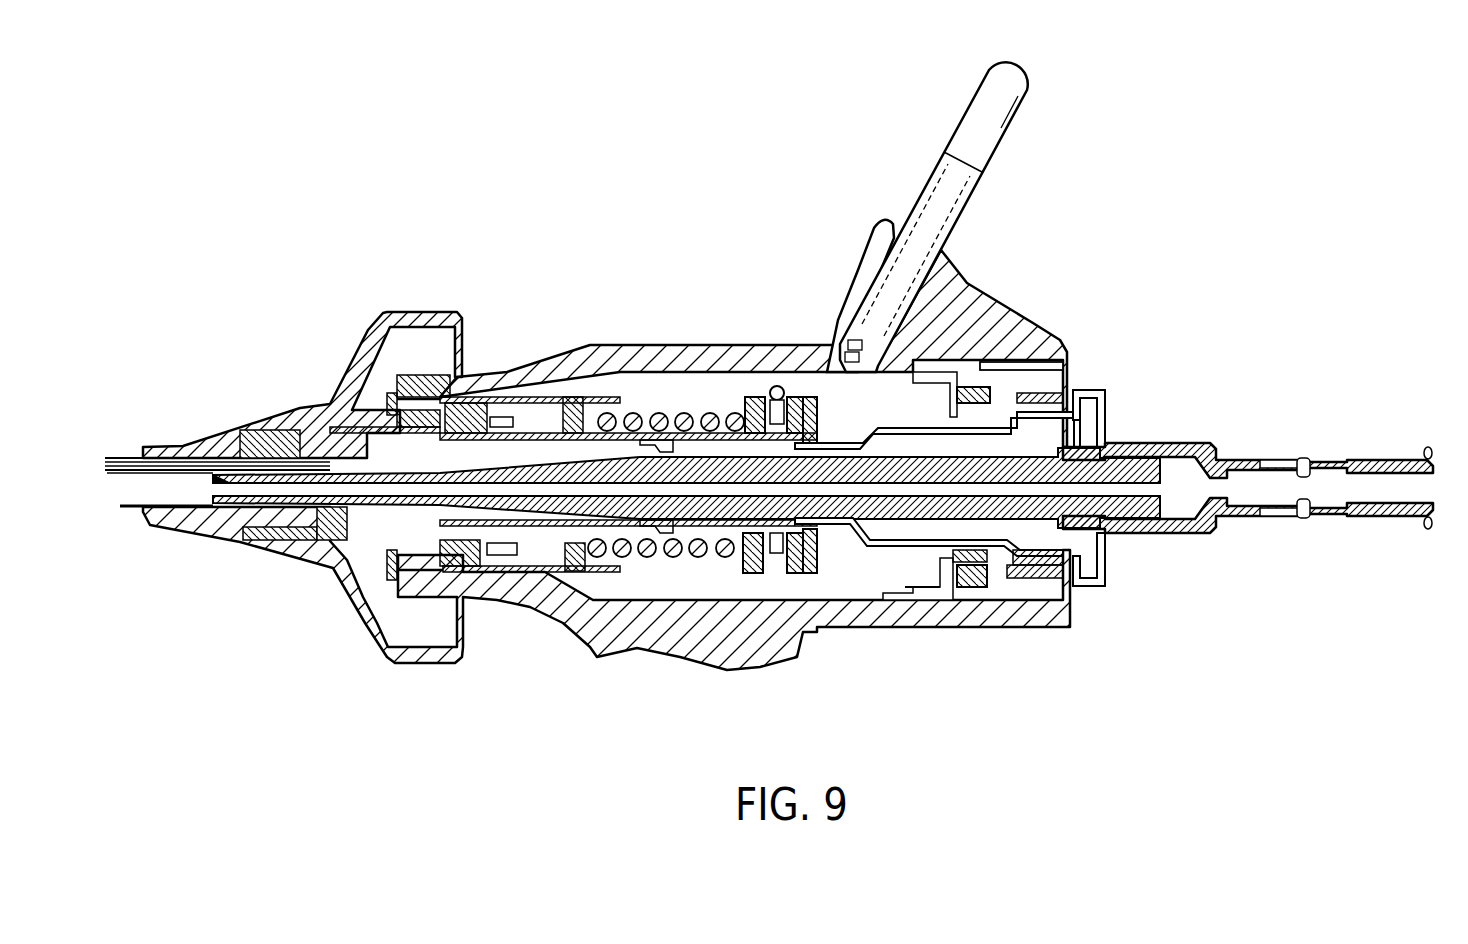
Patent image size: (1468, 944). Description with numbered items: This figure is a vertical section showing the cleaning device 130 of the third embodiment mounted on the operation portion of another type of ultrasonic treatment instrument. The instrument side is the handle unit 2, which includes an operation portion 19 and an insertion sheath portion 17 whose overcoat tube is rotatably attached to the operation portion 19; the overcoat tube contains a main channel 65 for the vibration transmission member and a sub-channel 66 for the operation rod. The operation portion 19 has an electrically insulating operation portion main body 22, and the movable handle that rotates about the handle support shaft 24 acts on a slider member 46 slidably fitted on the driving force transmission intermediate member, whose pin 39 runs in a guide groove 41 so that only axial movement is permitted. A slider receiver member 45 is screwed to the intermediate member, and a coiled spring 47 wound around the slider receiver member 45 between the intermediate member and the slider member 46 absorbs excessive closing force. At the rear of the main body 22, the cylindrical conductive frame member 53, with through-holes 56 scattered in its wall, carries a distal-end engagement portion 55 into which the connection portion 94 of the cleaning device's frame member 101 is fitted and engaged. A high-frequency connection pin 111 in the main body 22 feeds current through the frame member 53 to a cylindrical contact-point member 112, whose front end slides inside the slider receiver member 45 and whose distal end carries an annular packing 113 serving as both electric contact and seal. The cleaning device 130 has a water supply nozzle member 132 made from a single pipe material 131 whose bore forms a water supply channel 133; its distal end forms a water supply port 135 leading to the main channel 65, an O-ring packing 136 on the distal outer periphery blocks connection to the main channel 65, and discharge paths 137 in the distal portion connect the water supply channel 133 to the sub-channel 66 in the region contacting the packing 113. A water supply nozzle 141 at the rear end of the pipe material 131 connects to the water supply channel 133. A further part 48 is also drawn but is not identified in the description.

The handle unit 2 is at (531, 276).
The insertion sheath portion 17 is at (140, 437).
The operation portion 19 is at (793, 343).
The operation portion main body 22 is at (675, 345).
The handle support shaft 24 is at (774, 386).
The pin 39 is at (570, 397).
The guide groove 41 is at (606, 397).
The slider receiver member 45 is at (730, 556).
The slider member 46 is at (757, 573).
The coiled spring 47 is at (671, 557).
The flange 48 is at (343, 577).
The frame member 53 is at (940, 390).
The distal-end engagement portion 55 is at (990, 368).
The through-holes 56 is at (941, 590).
The main channel 65 is at (130, 497).
The sub-channel 66 is at (116, 456).
The connection portion 94 is at (975, 588).
The frame member 101 is at (1105, 406).
The high-frequency connection pin 111 is at (980, 138).
The contact-point member 112 is at (912, 548).
The packing 113 is at (658, 413).
The cleaning device 130 is at (1272, 410).
The pipe material 131 is at (882, 547).
The water supply nozzle member 132 is at (578, 512).
The water supply channel 133 is at (718, 485).
The water supply port 135 is at (210, 489).
The packing for sealing 136 is at (270, 473).
The discharge paths 137 is at (457, 433).
The water supply nozzle 141 is at (1392, 517).